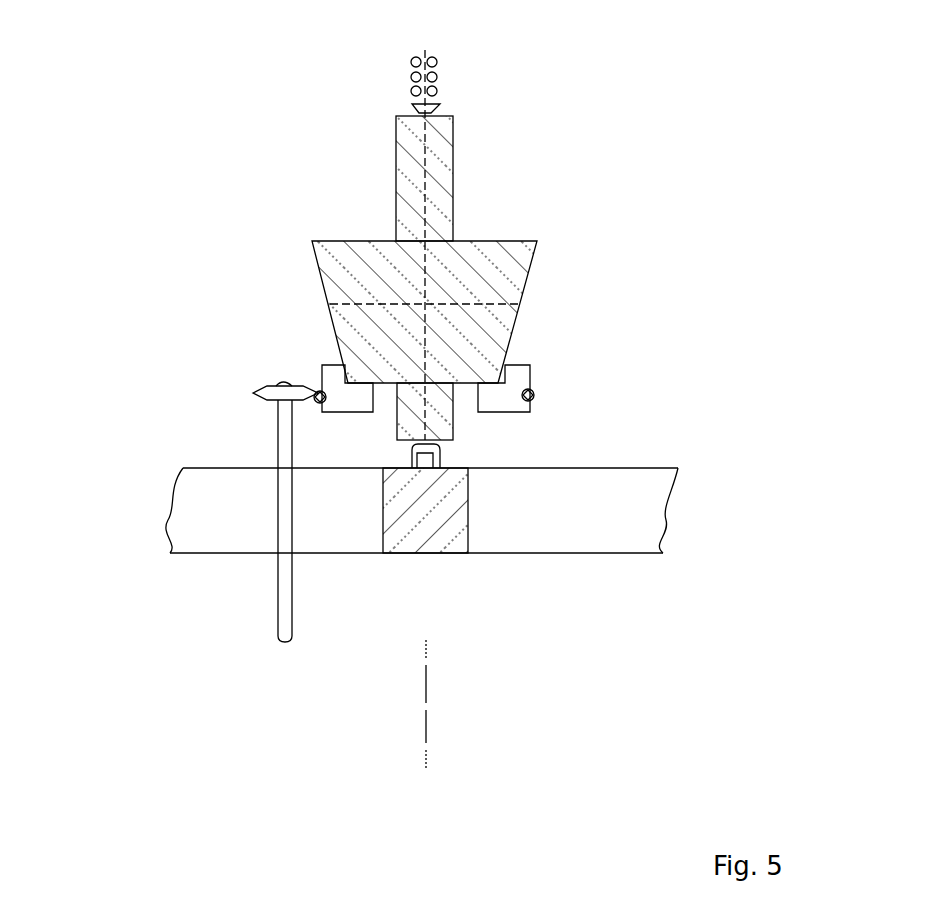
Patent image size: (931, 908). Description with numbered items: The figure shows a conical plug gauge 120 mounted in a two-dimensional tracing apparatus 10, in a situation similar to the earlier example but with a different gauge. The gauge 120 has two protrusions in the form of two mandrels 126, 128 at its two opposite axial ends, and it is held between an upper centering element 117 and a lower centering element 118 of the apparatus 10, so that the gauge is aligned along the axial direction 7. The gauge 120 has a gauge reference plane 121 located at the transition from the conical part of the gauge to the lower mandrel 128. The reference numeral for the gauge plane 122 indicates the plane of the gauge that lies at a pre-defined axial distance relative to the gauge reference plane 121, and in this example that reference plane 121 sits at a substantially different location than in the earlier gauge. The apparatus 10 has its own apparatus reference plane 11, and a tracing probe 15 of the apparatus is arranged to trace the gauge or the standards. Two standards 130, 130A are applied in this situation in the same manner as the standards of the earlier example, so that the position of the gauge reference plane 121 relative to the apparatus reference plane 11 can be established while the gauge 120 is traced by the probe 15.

The conical plug gauge 120 is at (221, 77).
The lower centering element 118 is at (478, 69).
The mandrel 126 is at (467, 178).
The gauge plane 122 is at (464, 312).
The gauge reference plane 121 is at (471, 418).
The standard 130A is at (291, 354).
The standard 130 is at (552, 354).
The tracing probe 15 is at (249, 494).
The apparatus 10 is at (128, 517).
The lower mandrel 128 is at (385, 513).
The apparatus reference plane 11 is at (380, 445).
The upper centering element 117 is at (483, 529).
The axial direction 7 is at (395, 704).